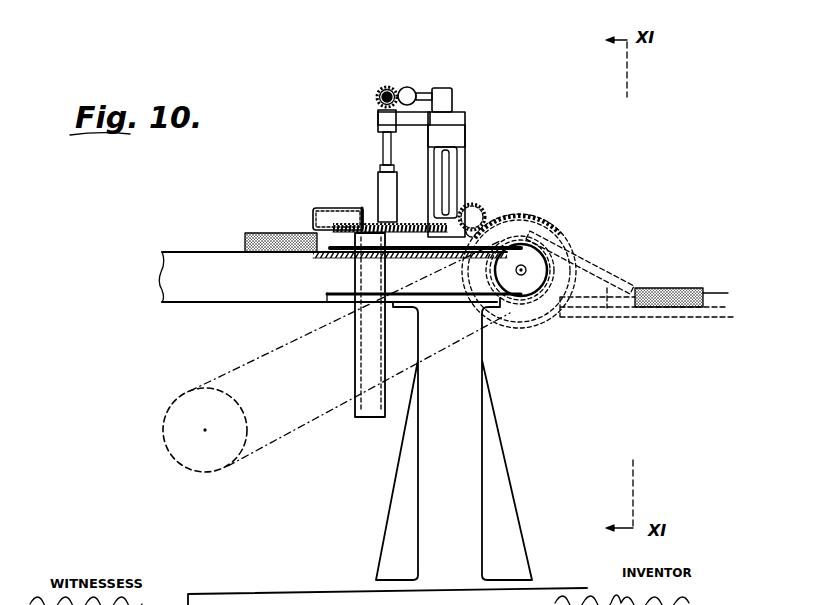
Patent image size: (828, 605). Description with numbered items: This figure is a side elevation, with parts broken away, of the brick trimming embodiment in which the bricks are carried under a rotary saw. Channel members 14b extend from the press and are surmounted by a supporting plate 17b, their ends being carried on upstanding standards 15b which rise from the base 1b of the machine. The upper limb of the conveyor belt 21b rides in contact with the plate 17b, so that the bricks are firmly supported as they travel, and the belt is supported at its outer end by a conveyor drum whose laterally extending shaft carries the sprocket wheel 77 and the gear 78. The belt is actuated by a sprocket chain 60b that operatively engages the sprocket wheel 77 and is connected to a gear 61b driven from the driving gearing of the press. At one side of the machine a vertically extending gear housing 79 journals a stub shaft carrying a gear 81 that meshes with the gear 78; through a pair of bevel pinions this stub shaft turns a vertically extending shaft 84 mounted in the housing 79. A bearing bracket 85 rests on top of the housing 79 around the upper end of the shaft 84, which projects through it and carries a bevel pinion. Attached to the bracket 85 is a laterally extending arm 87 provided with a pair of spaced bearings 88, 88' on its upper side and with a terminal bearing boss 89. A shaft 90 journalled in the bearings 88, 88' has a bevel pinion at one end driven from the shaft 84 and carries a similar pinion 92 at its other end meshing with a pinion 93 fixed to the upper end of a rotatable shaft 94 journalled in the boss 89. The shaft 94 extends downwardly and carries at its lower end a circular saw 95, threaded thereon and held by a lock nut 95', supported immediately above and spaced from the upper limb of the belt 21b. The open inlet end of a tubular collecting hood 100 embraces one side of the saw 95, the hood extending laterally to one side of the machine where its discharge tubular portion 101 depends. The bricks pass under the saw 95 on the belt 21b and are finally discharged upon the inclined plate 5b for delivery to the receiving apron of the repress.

The base 1b is at (305, 600).
The inclined plate 5b is at (600, 267).
The channel members 14b is at (180, 280).
The upstanding standards 15b is at (467, 443).
The supporting plate 17b is at (320, 242).
The conveyor belt 21b is at (164, 250).
The sprocket chain 60b is at (245, 365).
The gear 61b is at (183, 437).
The sprocket wheel 77 is at (530, 237).
The gear 78 is at (523, 217).
The gear housing 79 is at (465, 168).
The gear 81 is at (470, 200).
The vertically extending shaft 84 is at (447, 158).
The bearing bracket 85 is at (455, 118).
The laterally extending arm 87 is at (422, 115).
The bearing 88 is at (463, 74).
The bearing 88' is at (393, 67).
The terminal bearing boss 89 is at (378, 118).
The shaft 90 is at (424, 92).
The pinion 92 is at (381, 87).
The pinion 93 is at (377, 102).
The rotatable shaft 94 is at (383, 140).
The circular saw 95 is at (402, 197).
The lock nut 95' is at (353, 169).
The tubular collecting hood 100 is at (349, 198).
The discharge tubular portion 101 is at (357, 340).